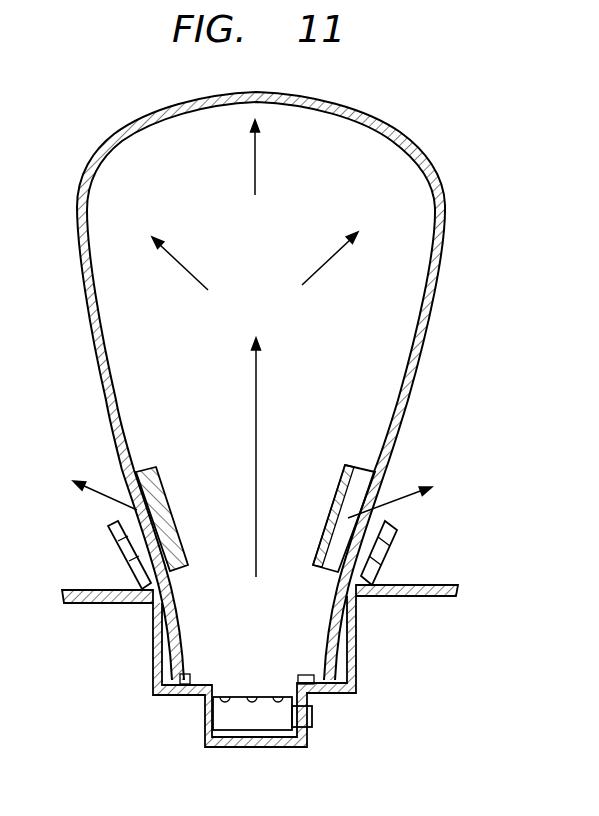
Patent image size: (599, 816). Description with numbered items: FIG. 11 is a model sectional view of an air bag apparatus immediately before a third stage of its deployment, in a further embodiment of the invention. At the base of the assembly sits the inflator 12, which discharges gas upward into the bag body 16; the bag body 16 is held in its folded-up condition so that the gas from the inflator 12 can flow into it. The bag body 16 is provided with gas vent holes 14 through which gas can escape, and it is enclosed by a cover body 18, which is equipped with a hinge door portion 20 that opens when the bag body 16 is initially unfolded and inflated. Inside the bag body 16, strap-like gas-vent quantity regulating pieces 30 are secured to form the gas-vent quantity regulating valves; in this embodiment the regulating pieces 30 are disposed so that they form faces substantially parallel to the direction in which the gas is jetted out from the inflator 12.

The inflator 12 is at (250, 715).
The gas vent holes 14 is at (158, 533).
The bag body 16 is at (421, 139).
The cover body 18 is at (414, 586).
The hinge door portion 20 is at (122, 560).
The gas-vent quantity regulating pieces 30 is at (166, 472).